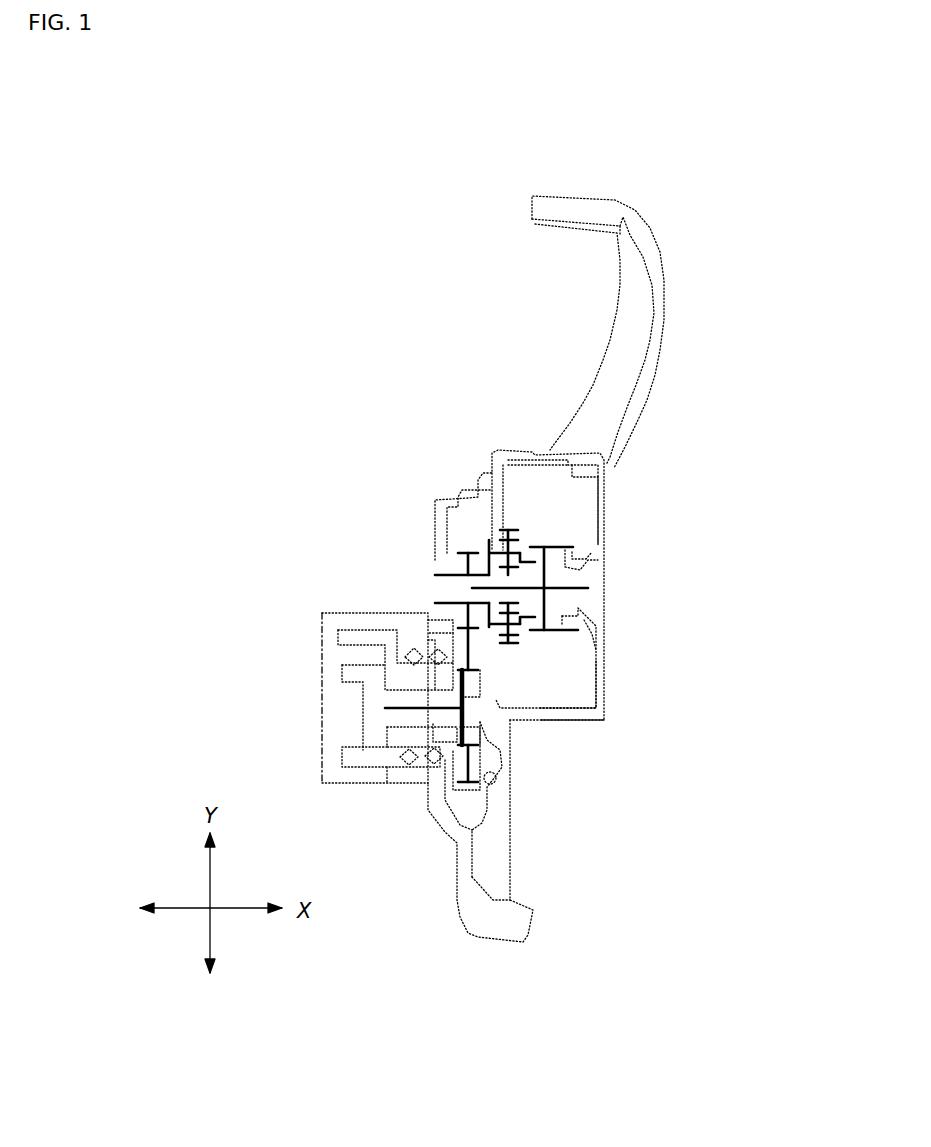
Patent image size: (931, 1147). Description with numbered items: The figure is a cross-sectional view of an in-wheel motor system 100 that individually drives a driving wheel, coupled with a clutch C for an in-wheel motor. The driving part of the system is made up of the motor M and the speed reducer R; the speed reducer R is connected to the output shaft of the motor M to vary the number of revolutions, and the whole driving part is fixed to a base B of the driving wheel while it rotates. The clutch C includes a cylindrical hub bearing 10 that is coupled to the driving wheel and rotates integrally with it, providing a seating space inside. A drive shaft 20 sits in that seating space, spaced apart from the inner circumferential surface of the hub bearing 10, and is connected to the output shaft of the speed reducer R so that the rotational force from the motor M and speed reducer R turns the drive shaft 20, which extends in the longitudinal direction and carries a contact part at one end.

The in-wheel motor system 100 is at (700, 238).
The base B is at (623, 417).
The speed reducer R is at (465, 538).
The motor M is at (597, 684).
The clutch C is at (322, 641).
The hub bearing 10 is at (375, 640).
The drive shaft 20 is at (385, 708).